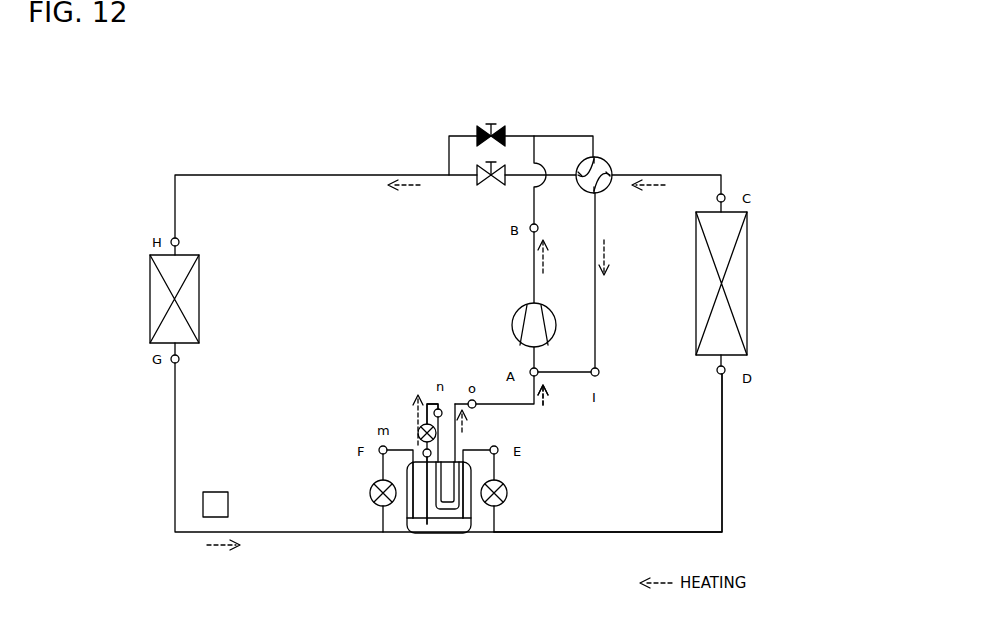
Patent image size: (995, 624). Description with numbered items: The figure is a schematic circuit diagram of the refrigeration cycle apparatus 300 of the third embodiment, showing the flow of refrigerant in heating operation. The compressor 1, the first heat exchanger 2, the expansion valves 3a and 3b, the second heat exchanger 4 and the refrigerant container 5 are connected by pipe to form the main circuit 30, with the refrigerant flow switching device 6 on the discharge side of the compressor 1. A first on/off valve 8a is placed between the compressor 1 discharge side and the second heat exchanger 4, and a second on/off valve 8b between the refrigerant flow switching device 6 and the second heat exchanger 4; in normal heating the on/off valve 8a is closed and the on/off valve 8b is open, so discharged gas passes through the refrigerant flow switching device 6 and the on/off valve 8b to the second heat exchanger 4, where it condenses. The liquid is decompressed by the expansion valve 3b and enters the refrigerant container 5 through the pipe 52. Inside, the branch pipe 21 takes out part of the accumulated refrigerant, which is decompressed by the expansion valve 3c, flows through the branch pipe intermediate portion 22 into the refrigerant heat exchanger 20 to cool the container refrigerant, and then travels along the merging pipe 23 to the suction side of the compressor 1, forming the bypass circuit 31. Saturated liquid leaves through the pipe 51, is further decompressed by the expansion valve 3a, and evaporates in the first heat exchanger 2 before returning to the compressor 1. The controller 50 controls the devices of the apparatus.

The refrigeration cycle apparatus 300 is at (170, 163).
The compressor 1 is at (514, 313).
The first heat exchanger 2 is at (749, 268).
The second heat exchanger 4 is at (201, 275).
The refrigerant flow switching device 6 is at (605, 160).
The first on/off valve 8a is at (503, 130).
The second on/off valve 8b is at (477, 178).
The first pressure reducing device 3a is at (506, 490).
The second pressure reducing device 3b is at (371, 489).
The third pressure reducing device 3c is at (418, 430).
The refrigerant container 5 is at (456, 533).
The refrigerant heat exchanger 20 is at (444, 514).
The branch pipe 21 is at (428, 512).
The branch pipe intermediate portion 22 is at (427, 404).
The merging pipe 23 is at (497, 403).
The main circuit 30 is at (728, 438).
The bypass circuit 31 is at (555, 405).
The controller 50 is at (213, 491).
The first pipe 51 is at (458, 522).
The second pipe 52 is at (407, 512).